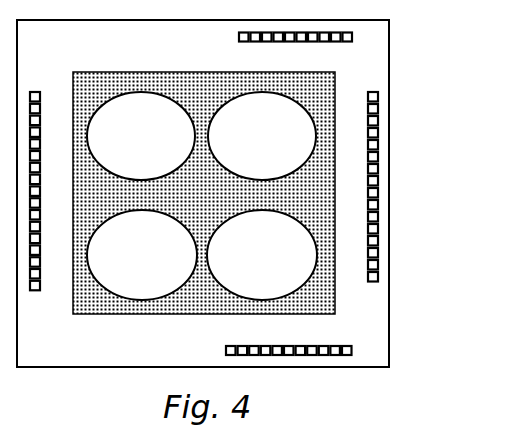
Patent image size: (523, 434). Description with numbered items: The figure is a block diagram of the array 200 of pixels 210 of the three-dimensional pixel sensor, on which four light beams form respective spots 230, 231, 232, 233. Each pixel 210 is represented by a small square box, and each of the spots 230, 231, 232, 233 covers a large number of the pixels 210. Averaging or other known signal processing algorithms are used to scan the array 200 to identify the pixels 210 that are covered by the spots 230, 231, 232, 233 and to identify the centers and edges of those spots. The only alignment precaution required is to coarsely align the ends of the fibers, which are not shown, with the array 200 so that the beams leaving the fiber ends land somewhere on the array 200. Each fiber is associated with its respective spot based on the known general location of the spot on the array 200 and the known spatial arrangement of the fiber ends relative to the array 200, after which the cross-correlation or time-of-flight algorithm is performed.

The array 200 is at (373, 60).
The pixels 210 is at (112, 88).
The spot 230 is at (121, 148).
The spot 231 is at (242, 148).
The spot 232 is at (122, 264).
The spot 233 is at (242, 264).